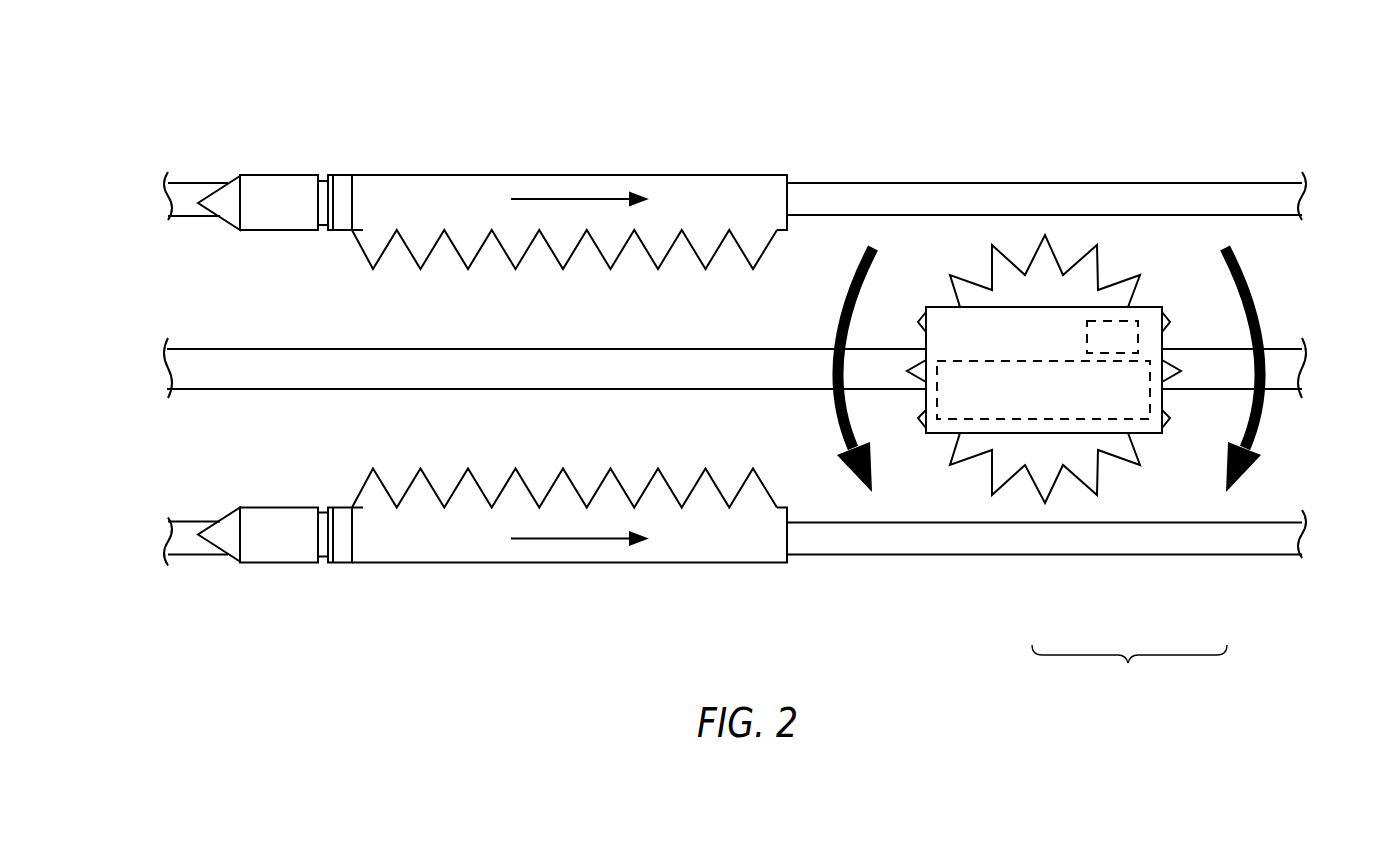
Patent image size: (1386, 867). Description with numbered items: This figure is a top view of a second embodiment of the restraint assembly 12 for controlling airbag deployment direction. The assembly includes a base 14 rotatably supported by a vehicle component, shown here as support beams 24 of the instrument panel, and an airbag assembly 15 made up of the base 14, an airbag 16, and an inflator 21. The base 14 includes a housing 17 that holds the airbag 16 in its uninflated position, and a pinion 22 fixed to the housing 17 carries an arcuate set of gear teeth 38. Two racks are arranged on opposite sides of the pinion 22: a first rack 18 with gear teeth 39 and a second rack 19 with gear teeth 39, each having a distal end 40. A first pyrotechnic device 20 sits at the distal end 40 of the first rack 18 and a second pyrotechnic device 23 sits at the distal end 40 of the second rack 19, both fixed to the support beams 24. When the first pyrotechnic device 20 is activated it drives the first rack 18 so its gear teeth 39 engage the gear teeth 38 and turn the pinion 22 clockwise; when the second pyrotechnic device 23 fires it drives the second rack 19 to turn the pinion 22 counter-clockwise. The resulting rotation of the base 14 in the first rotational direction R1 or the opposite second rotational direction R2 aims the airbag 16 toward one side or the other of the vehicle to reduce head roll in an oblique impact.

The restraint assembly 12 is at (1172, 74).
The base 14 is at (1044, 321).
The airbag assembly 15 is at (1129, 670).
The airbag 16 is at (1163, 338).
The housing 17 is at (1163, 400).
The first rack 18 is at (473, 175).
The second rack 19 is at (473, 563).
The first pyrotechnic device 20 is at (273, 188).
The inflator 21 is at (1104, 340).
The pinion 22 is at (1045, 260).
The second pyrotechnic device 23 is at (275, 550).
The support beam 24 is at (1258, 196).
The gear teeth 38 is at (1000, 473).
The gear teeth 39 is at (372, 241).
The distal end 40 is at (377, 188).
The first rotational direction R1 is at (1265, 327).
The second rotational direction R2 is at (837, 325).